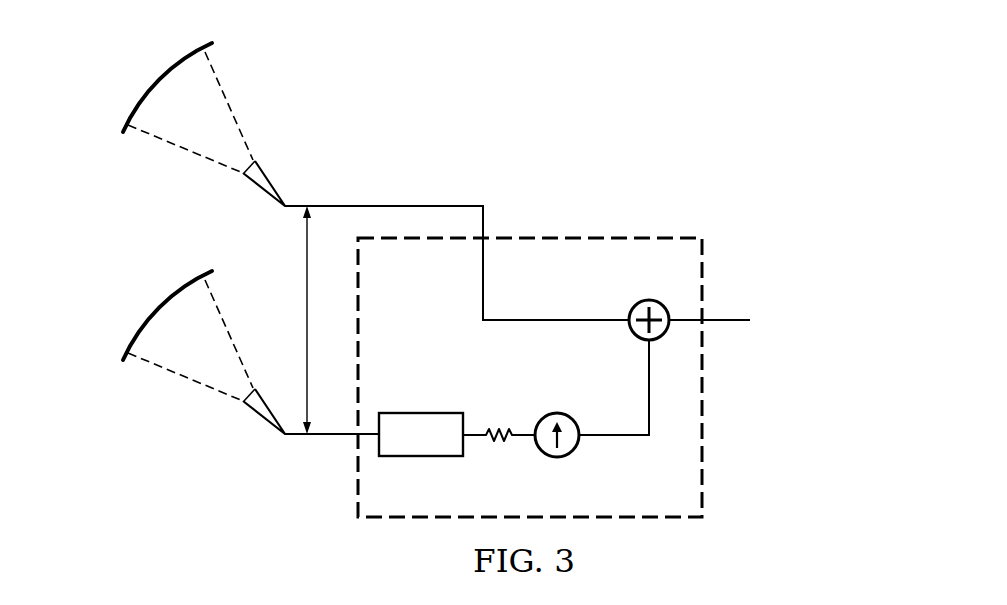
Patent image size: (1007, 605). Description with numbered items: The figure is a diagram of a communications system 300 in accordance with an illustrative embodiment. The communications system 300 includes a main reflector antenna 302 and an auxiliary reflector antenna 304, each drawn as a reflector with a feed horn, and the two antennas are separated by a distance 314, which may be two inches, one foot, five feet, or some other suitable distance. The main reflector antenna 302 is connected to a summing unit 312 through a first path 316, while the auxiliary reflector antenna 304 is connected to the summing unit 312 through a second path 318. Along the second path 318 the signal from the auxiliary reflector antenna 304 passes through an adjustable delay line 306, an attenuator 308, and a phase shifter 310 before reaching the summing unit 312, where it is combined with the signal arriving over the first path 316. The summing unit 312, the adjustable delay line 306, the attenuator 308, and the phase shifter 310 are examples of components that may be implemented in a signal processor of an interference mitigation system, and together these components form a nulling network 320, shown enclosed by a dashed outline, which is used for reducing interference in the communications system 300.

The communications system 300 is at (610, 158).
The main reflector antenna 302 is at (247, 96).
The auxiliary reflector antenna 304 is at (163, 391).
The adjustable delay line 306 is at (420, 457).
The attenuator 308 is at (498, 443).
The phase shifter 310 is at (557, 458).
The summing unit 312 is at (654, 299).
The distance 314 is at (306, 257).
The first path 316 is at (393, 204).
The second path 318 is at (329, 438).
The nulling network 320 is at (705, 440).